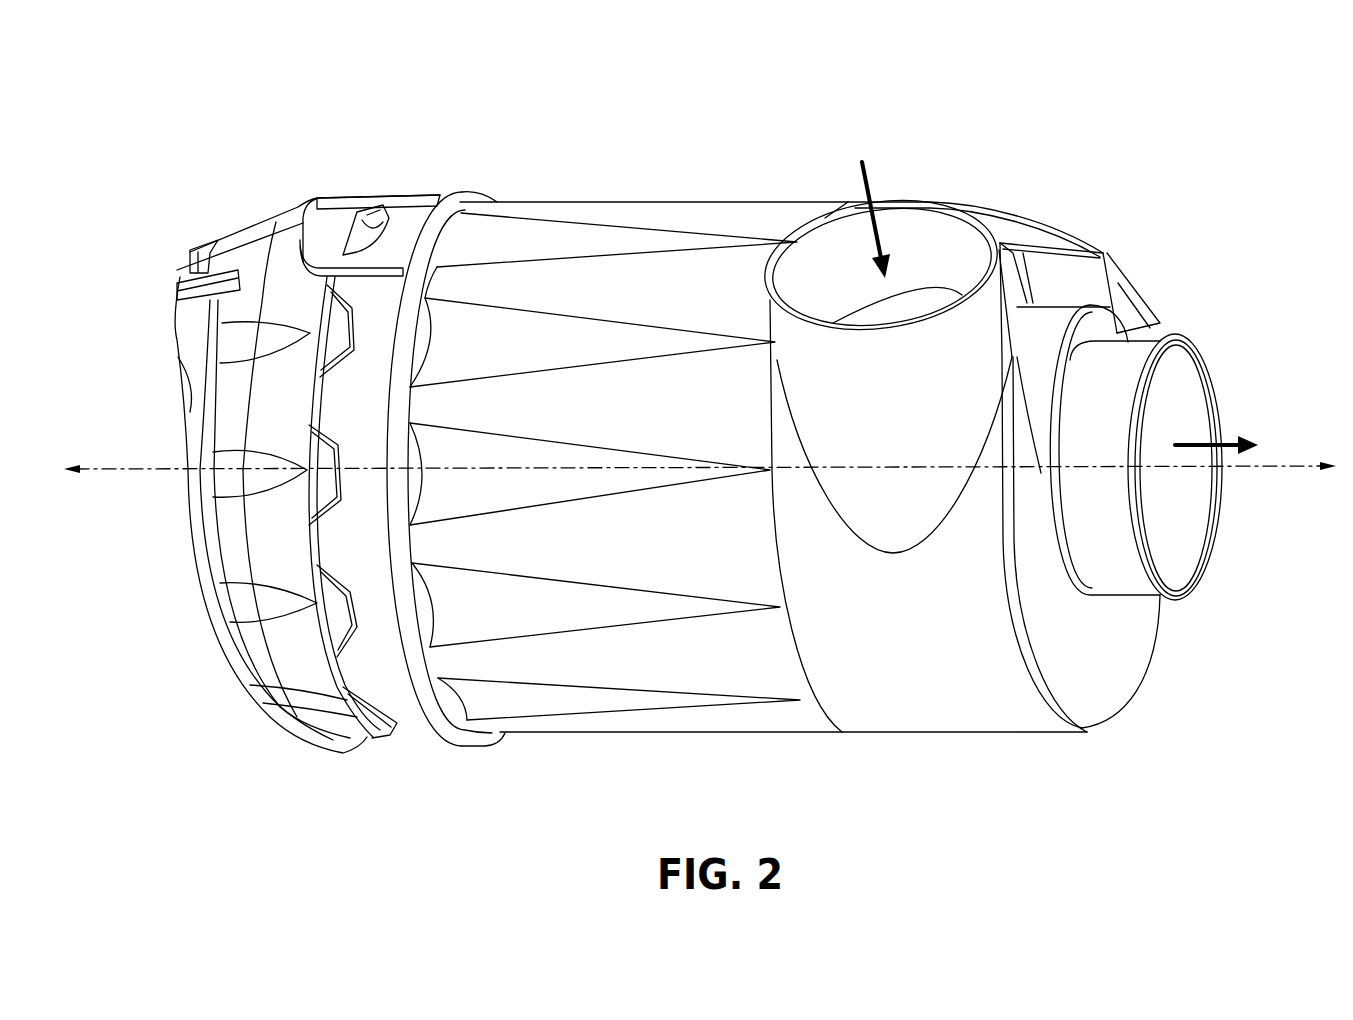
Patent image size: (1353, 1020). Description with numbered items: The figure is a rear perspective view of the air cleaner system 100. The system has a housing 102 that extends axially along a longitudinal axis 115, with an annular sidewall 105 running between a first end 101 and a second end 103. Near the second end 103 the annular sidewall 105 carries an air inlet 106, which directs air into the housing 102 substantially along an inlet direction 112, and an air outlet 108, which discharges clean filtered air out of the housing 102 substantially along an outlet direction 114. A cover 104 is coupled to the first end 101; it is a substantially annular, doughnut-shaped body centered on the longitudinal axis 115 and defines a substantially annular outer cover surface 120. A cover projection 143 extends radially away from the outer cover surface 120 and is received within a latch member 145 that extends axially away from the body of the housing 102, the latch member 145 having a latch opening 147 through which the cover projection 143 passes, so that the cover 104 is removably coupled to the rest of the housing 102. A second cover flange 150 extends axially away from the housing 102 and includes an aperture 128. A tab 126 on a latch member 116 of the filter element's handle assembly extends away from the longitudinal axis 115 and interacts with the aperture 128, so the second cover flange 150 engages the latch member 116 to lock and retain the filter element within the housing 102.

The air cleaner system 100 is at (1163, 114).
The first end 101 is at (226, 745).
The housing 102 is at (632, 212).
The second end 103 is at (1155, 724).
The cover 104 is at (330, 222).
The annular sidewall 105 is at (745, 222).
The air inlet 106 is at (970, 250).
The air outlet 108 is at (1213, 557).
The inlet direction 112 is at (870, 183).
The outlet direction 114 is at (1207, 443).
The longitudinal axis 115 is at (1275, 462).
The latch member 116 is at (176, 280).
The outer cover surface 120 is at (247, 530).
The tab 126 is at (214, 242).
The aperture 128 is at (242, 247).
The cover projection 143 is at (383, 222).
The latch member 145 is at (327, 218).
The latch opening 147 is at (357, 235).
The second cover flange 150 is at (197, 310).